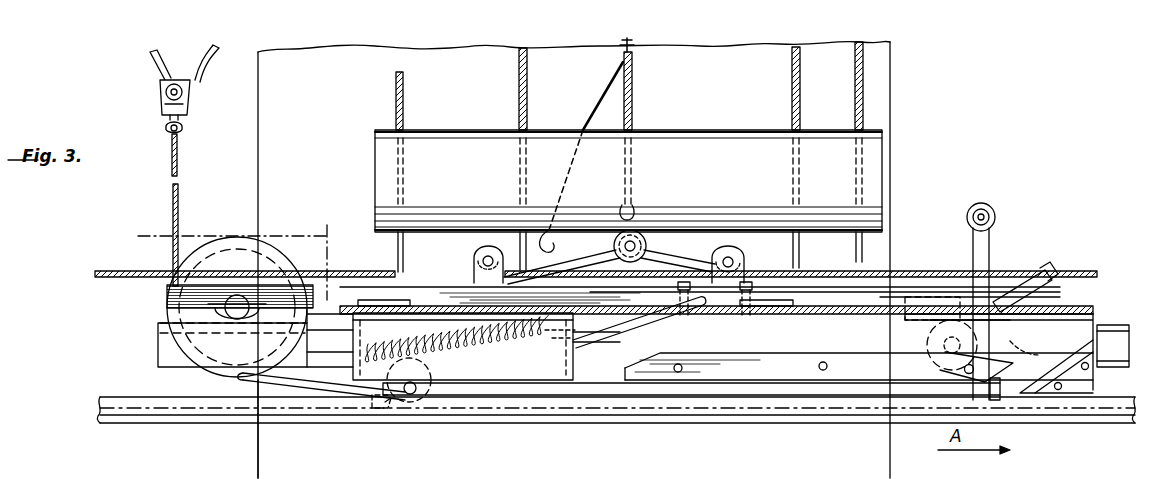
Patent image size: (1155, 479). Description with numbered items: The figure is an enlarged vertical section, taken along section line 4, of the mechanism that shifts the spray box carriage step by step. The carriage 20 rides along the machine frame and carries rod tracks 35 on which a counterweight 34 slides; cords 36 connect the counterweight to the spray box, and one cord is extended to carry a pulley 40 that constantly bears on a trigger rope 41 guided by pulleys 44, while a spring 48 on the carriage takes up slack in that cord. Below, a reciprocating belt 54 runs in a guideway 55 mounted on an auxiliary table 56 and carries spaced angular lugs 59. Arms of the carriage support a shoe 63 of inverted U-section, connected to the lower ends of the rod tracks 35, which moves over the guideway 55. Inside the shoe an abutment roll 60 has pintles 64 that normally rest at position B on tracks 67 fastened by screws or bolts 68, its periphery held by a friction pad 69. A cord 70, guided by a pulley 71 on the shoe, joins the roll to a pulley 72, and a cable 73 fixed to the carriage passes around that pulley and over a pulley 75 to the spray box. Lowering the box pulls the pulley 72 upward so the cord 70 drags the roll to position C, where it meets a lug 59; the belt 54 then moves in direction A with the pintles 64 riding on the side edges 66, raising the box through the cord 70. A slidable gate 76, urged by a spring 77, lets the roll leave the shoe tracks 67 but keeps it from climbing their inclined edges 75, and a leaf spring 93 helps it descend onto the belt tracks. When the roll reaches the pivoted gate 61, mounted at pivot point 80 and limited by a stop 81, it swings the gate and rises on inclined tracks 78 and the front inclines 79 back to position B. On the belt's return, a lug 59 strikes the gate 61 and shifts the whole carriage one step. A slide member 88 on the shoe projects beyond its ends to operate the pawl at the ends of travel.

The section line / cross bar end 4 is at (1116, 318).
The carriage 20 is at (888, 108).
The counterweight 34 is at (628, 181).
The rod tracks 35 is at (404, 95).
The cords 36 is at (528, 84).
The pulley 40 is at (640, 238).
The trigger rope 41 is at (596, 261).
The pulleys 44 is at (486, 255).
The spring 48 is at (634, 47).
The reciprocating belt 54 is at (195, 418).
The guideway 55 is at (850, 412).
The auxiliary table 56 is at (276, 422).
The angular lugs 59 is at (334, 378).
The abutment roll 60 is at (990, 345).
The pivoted gate 61 is at (1022, 347).
The shoe 63 is at (1060, 312).
The pintles 64 is at (412, 395).
The side edges 66 is at (698, 393).
The tracks 67 is at (921, 343).
The screws or bolts 68 is at (681, 364).
The friction pad 69 is at (903, 302).
The cord 70 is at (335, 395).
The pulley 71 is at (200, 338).
The pulley 72 is at (190, 105).
The cable 73 is at (150, 64).
The inclined edges 75 is at (628, 365).
The longitudinally slidable gate 76 is at (520, 372).
The spring 77 is at (535, 310).
The inclined tracks 78 is at (1095, 386).
The front inclines 79 is at (998, 366).
The pivot point 80 is at (986, 214).
The stop 81 is at (1054, 268).
The slide member 88 is at (160, 327).
The leaf spring 93 is at (638, 330).
The position C is at (388, 420).